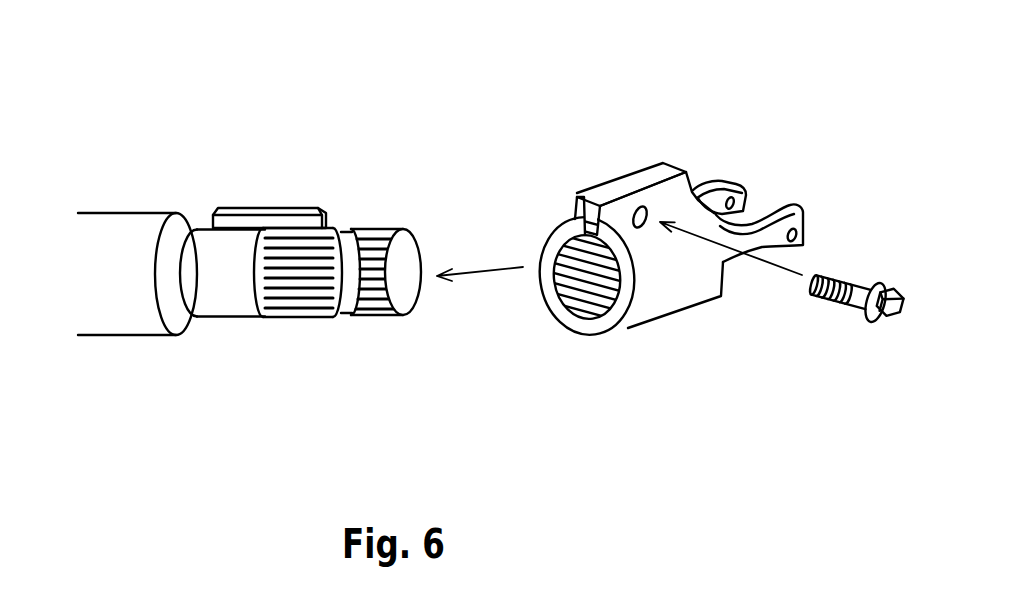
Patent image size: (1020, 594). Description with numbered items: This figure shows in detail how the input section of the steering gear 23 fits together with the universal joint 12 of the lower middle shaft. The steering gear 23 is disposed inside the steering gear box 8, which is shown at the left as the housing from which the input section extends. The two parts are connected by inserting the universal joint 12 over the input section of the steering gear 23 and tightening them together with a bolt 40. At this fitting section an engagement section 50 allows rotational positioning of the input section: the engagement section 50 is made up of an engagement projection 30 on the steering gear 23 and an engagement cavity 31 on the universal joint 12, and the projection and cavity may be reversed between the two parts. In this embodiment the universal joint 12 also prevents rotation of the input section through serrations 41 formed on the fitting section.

The steering gear box 8 is at (123, 317).
The steering gear 23 is at (229, 297).
The engagement projection 30 is at (253, 213).
The engagement cavity 31 is at (577, 197).
The engagement section 50 is at (560, 80).
The serrations 41 is at (558, 260).
The universal joint 12 is at (678, 278).
The bolt 40 is at (882, 283).